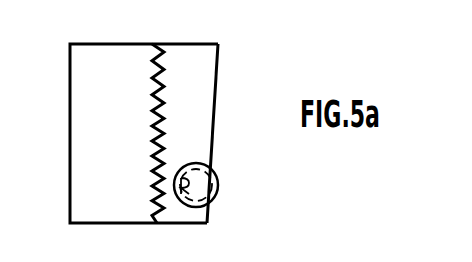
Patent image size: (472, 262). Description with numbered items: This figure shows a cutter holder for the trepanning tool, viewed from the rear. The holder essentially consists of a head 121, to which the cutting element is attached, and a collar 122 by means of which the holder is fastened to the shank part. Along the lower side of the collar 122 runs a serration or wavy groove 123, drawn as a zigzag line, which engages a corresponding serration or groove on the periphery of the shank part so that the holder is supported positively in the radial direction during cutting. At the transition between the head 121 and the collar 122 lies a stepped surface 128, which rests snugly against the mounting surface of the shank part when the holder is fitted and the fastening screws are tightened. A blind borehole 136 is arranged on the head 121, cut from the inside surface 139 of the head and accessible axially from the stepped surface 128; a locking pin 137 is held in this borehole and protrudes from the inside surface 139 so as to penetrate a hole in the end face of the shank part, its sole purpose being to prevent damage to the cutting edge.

The head 121 is at (189, 66).
The collar 122 is at (98, 63).
The wavy groove 123 is at (156, 70).
The stepped surface 128 is at (205, 62).
The blind borehole 136 is at (181, 183).
The pin 137 is at (216, 185).
The inside surface 139 is at (214, 114).